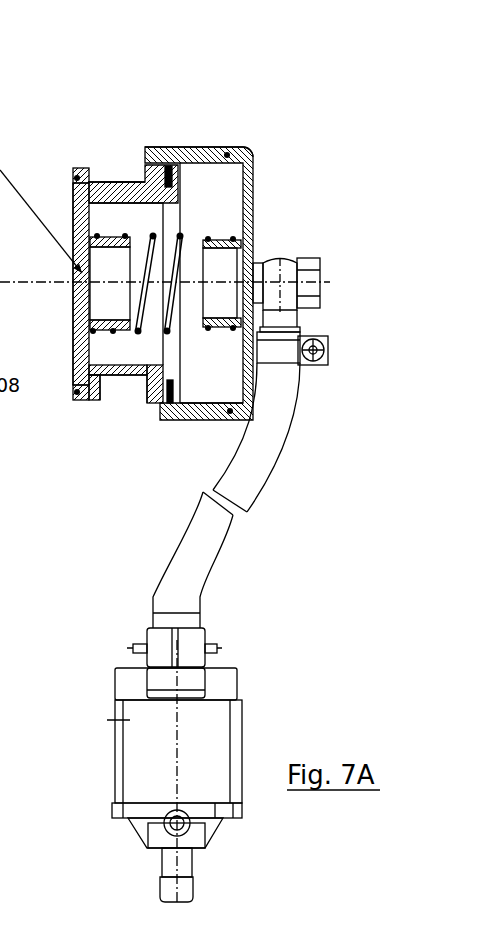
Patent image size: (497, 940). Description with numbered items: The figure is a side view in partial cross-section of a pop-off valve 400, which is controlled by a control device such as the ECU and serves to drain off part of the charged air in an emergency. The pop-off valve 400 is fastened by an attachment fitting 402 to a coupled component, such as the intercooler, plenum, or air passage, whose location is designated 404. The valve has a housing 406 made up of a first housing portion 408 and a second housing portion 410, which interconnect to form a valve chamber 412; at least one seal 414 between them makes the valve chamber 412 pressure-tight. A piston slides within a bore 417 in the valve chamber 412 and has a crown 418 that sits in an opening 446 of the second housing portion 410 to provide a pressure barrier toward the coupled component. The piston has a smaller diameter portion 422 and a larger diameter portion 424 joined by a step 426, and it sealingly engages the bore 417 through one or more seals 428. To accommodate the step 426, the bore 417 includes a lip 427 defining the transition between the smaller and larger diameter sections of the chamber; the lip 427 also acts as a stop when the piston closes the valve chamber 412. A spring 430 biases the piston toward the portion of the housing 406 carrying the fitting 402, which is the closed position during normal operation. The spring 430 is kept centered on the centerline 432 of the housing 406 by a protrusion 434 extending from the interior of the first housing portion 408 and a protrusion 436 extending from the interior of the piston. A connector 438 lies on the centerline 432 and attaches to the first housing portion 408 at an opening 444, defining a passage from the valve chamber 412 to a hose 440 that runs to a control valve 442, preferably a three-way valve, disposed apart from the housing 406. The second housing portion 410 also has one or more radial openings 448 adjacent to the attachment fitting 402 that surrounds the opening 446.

The pop-off valve 400 is at (342, 279).
The attachment fitting 402 is at (72, 163).
The coupled component location 404 is at (60, 264).
The housing 406 is at (258, 179).
The first housing portion 408 is at (252, 150).
The second housing portion 410 is at (157, 390).
The valve chamber 412 is at (220, 204).
The seal 414 is at (230, 147).
The bore 417 is at (115, 405).
The crown 418 is at (72, 350).
The smaller diameter portion 422 is at (100, 197).
The larger diameter portion 424 is at (173, 200).
The step 426 is at (189, 365).
The lip 427 is at (147, 173).
The seal 428 is at (172, 421).
The spring 430 is at (116, 184).
The centerline 432 is at (192, 280).
The protrusion 434 is at (265, 349).
The protrusion 436 is at (100, 400).
The connector 438 is at (287, 296).
The conduit or hose 440 is at (281, 457).
The control valve 442 is at (205, 726).
The opening 444 is at (263, 260).
The opening 446 is at (76, 218).
The radial openings 448 is at (108, 180).